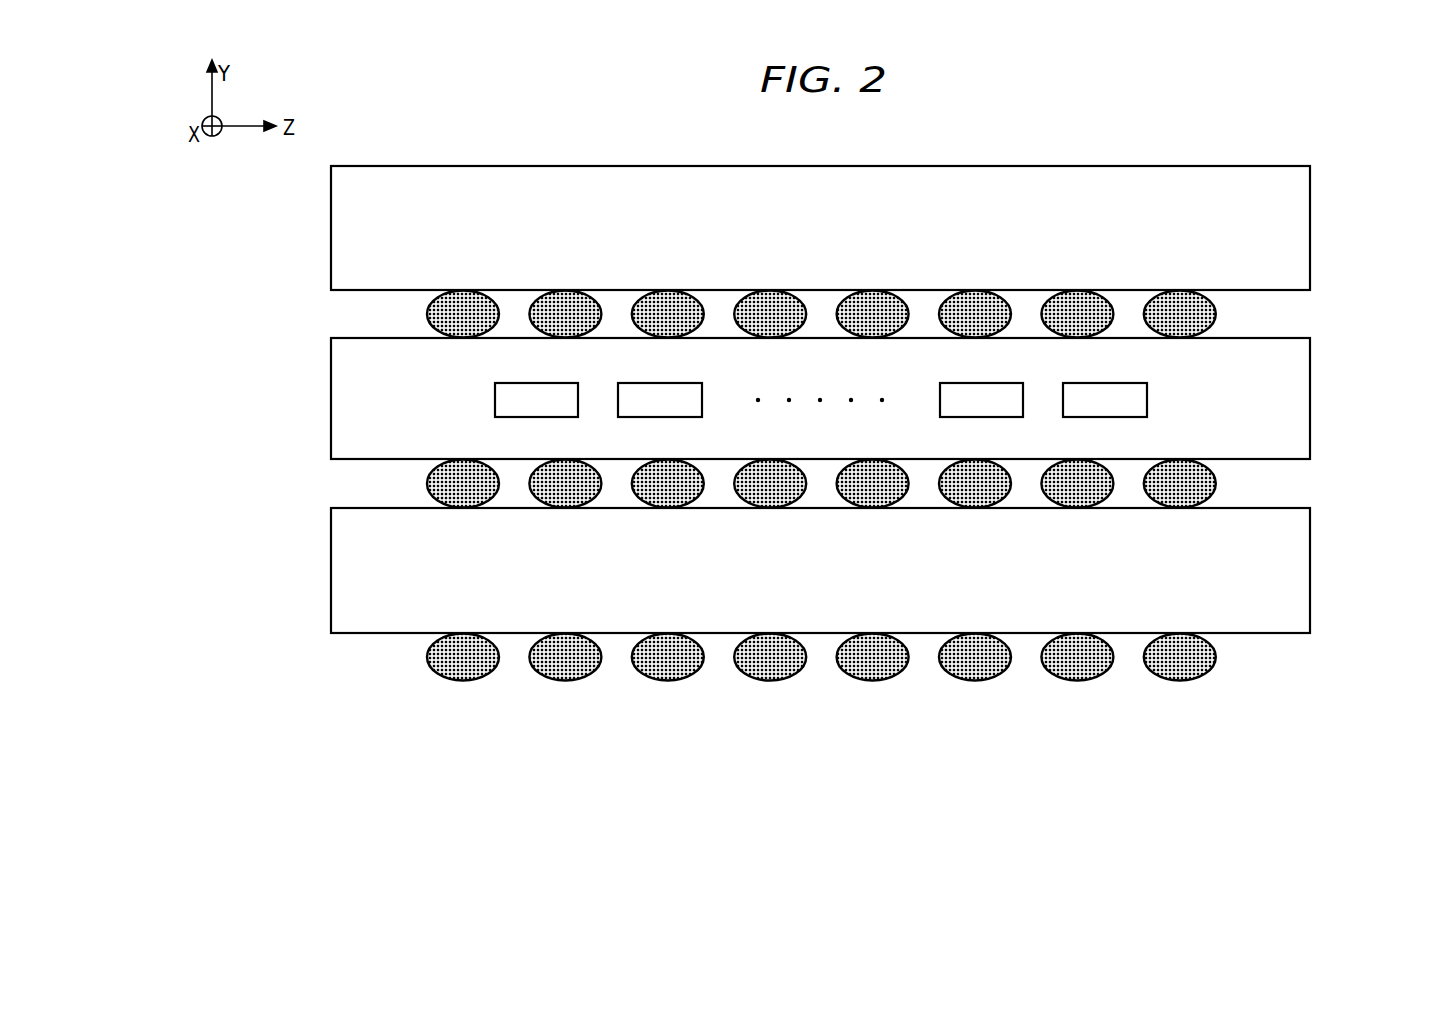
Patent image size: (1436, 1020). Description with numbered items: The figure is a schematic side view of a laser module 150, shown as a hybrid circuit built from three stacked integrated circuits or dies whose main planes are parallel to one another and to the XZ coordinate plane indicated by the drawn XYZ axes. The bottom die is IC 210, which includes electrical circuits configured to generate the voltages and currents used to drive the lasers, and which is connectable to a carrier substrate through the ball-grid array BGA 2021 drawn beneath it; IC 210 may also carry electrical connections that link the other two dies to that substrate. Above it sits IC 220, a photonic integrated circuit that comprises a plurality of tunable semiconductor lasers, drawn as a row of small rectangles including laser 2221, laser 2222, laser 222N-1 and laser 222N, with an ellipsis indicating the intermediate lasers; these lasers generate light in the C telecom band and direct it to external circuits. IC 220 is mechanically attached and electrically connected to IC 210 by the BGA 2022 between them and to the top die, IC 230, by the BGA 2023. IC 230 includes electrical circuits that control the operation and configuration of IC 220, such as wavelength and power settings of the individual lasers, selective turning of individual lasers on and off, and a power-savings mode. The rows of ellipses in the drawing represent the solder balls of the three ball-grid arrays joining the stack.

The laser module 150 is at (835, 133).
The IC 230 is at (1311, 230).
The IC 220 is at (1311, 400).
The IC 210 is at (1311, 570).
The BGA 2021 is at (382, 655).
The BGA 2022 is at (382, 483).
The BGA 2023 is at (382, 311).
The tunable semiconductor laser 2221 is at (524, 419).
The tunable semiconductor laser 2222 is at (647, 419).
The tunable semiconductor laser 222N-1 is at (968, 419).
The tunable semiconductor laser 222N is at (1094, 419).